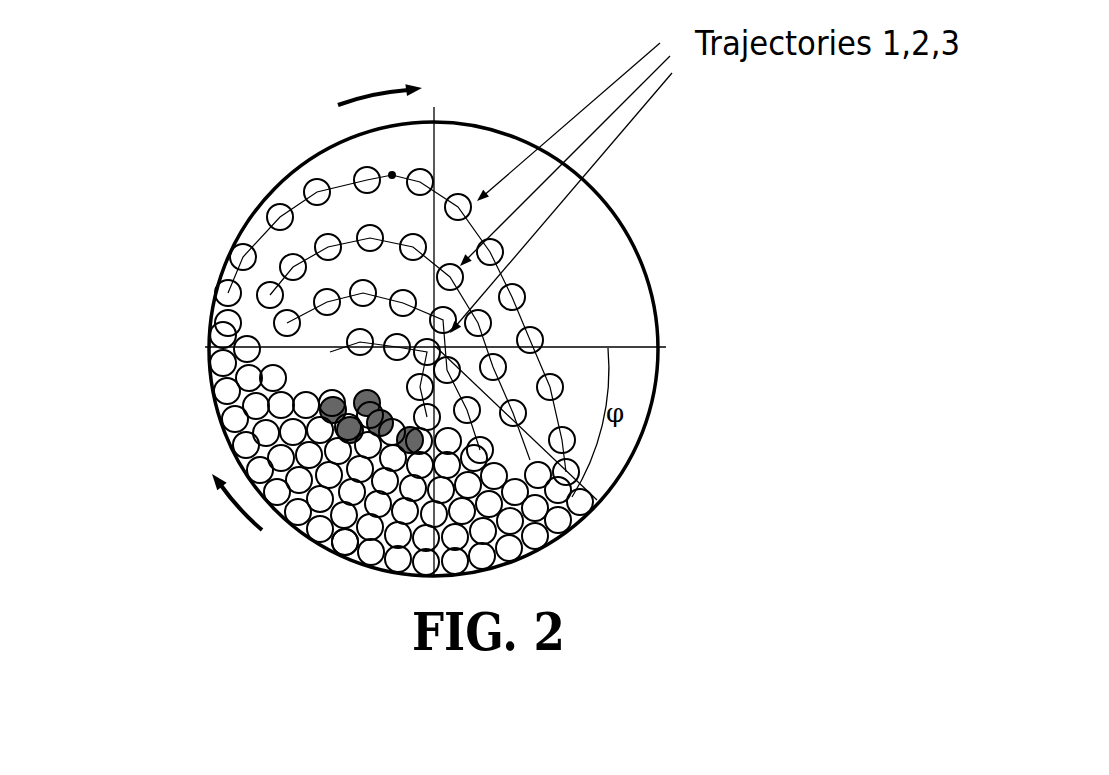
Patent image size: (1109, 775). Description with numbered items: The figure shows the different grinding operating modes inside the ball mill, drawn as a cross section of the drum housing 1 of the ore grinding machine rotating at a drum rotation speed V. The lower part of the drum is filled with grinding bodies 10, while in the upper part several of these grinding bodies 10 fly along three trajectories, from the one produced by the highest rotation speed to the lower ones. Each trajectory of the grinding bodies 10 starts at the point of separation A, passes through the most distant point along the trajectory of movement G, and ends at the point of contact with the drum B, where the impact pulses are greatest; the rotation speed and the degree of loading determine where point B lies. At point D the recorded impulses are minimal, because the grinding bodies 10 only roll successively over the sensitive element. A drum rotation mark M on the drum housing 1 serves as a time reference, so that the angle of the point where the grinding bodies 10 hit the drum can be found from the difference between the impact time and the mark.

The drum housing 1 is at (649, 424).
The grinding bodies 10 is at (266, 456).
The point of separation of a grinding body A is at (215, 290).
The point of contact with drum B is at (600, 508).
The starting point for recording minimum deflections D is at (352, 545).
The most distant point along the trajectory of movement G is at (433, 162).
The drum rotation mark M is at (676, 334).
The drum rotation speed V is at (375, 81).